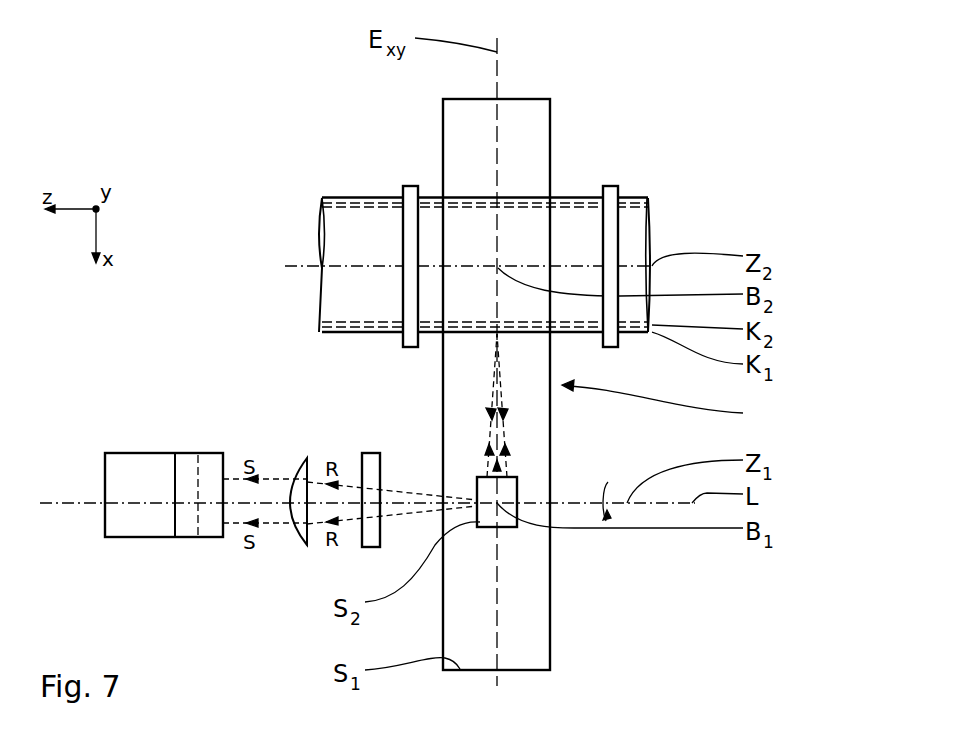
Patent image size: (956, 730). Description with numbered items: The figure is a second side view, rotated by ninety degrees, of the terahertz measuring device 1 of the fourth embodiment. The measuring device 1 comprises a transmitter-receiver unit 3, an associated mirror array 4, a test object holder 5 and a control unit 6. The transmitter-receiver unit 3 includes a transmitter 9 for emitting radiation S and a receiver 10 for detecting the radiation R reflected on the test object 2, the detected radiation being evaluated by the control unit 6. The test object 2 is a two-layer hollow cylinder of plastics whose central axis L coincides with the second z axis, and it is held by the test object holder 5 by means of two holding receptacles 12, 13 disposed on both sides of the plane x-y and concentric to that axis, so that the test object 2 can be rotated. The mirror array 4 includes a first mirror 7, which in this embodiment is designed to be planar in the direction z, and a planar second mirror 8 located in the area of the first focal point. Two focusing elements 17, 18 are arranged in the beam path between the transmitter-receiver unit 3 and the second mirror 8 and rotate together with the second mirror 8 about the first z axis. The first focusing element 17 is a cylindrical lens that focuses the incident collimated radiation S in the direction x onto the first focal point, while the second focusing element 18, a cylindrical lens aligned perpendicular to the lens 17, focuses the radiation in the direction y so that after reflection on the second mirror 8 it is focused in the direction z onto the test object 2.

The measuring device 1 is at (256, 73).
The test object 2 is at (492, 225).
The transmitter-receiver unit 3 is at (207, 485).
The mirror array 4 is at (661, 404).
The test object holder 5 is at (384, 174).
The control unit 6 is at (166, 485).
The first mirror 7 is at (450, 645).
The second mirror 8 is at (507, 527).
The transmitter 9 is at (213, 537).
The receiver 10 is at (188, 537).
The holding receptacle 12 is at (410, 186).
The holding receptacle 13 is at (611, 186).
The first focusing element 17 is at (302, 463).
The second focusing element 18 is at (372, 460).